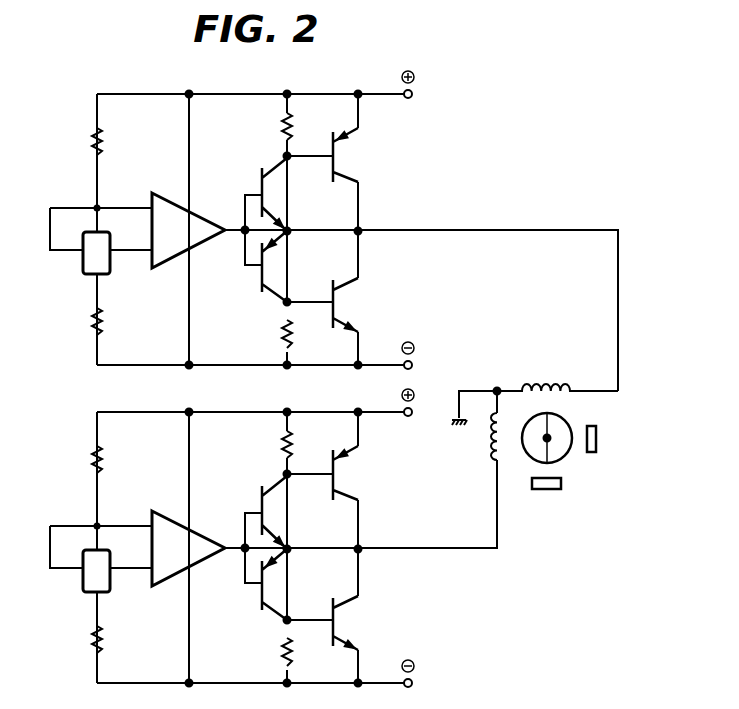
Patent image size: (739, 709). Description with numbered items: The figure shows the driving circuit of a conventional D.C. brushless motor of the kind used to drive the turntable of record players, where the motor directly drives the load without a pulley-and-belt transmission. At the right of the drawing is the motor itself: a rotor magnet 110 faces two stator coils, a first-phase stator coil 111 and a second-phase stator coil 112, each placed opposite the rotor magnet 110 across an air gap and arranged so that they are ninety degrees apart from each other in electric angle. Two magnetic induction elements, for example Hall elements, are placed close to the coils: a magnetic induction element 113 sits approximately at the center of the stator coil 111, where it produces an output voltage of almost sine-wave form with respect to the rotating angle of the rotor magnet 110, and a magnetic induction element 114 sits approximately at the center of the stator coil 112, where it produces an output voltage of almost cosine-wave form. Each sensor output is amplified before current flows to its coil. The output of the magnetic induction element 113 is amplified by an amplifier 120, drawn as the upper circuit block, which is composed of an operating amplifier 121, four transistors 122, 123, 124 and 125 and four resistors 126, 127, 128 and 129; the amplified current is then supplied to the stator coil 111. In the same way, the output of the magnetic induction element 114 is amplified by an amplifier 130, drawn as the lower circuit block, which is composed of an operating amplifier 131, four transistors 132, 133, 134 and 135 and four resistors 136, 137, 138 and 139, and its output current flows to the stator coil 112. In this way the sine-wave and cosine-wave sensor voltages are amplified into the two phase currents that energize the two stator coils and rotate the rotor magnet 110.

The rotor magnet 110 is at (565, 455).
The stator coil 111 is at (541, 386).
The stator coil 112 is at (492, 445).
The magnetic induction element 113 is at (83, 262).
The magnetic induction element 114 is at (83, 580).
The amplifier 120 is at (142, 94).
The operating amplifier 121 is at (180, 193).
The transistor 122 is at (270, 264).
The transistor 123 is at (270, 191).
The transistor 124 is at (345, 303).
The transistor 125 is at (345, 157).
The resistor 126 is at (95, 322).
The resistor 127 is at (95, 142).
The resistor 128 is at (285, 334).
The resistor 129 is at (285, 130).
The amplifier 130 is at (269, 529).
The operating amplifier 131 is at (186, 529).
The transistor 132 is at (297, 584).
The transistor 133 is at (297, 512).
The transistor 134 is at (369, 623).
The transistor 135 is at (369, 473).
The resistor 136 is at (71, 639).
The resistor 137 is at (72, 459).
The resistor 138 is at (262, 652).
The resistor 139 is at (262, 444).